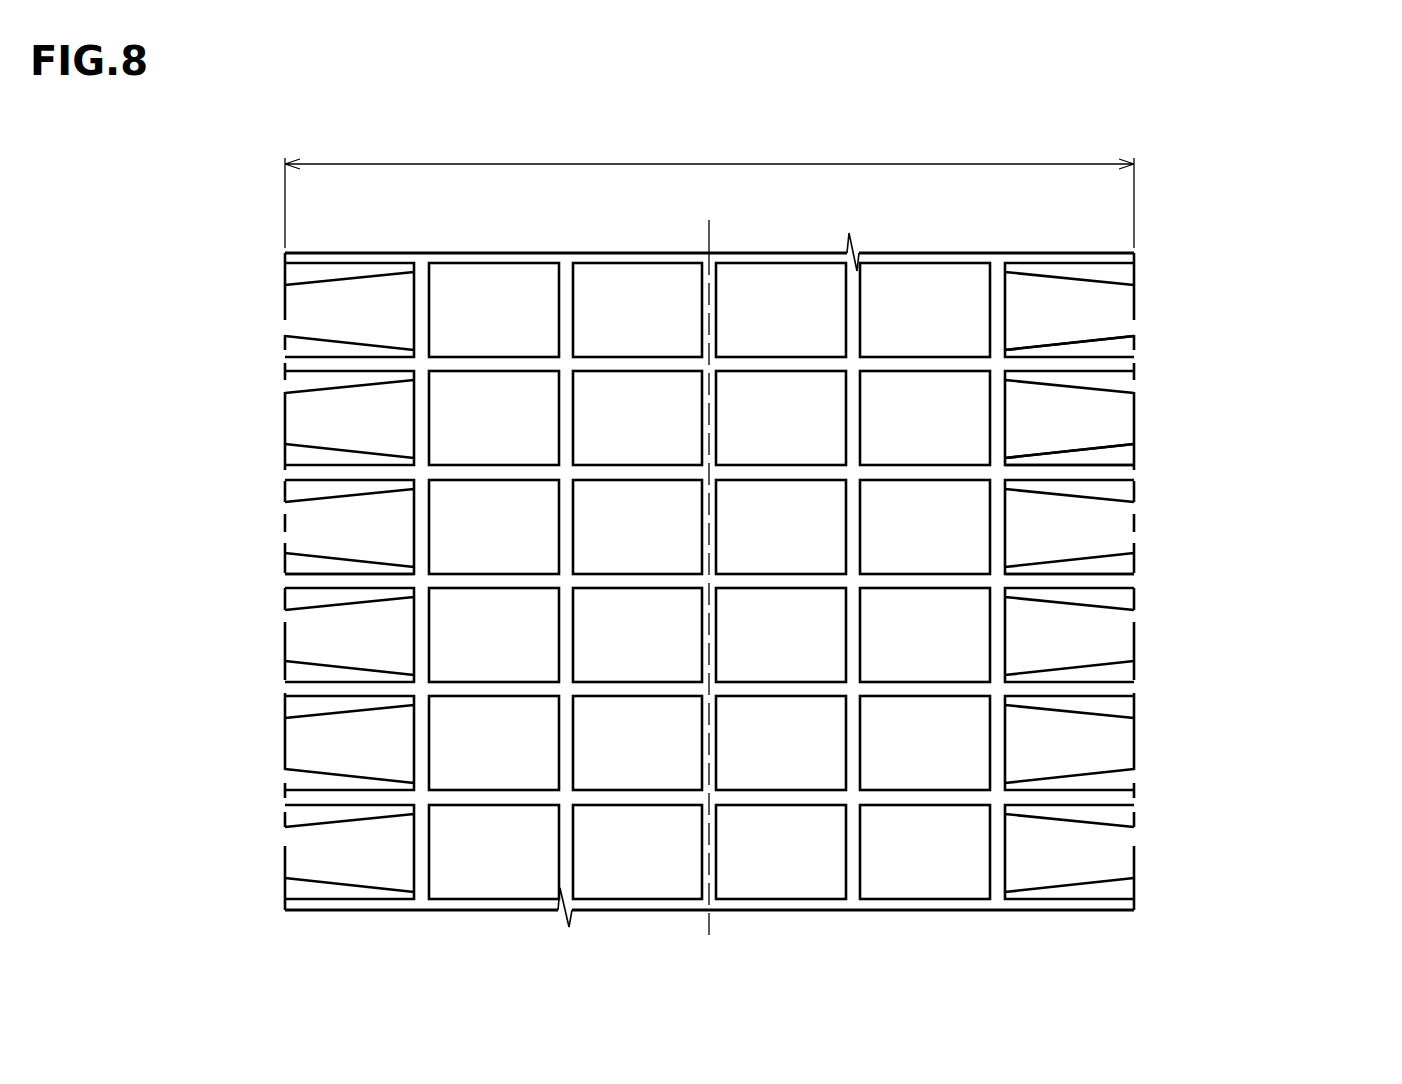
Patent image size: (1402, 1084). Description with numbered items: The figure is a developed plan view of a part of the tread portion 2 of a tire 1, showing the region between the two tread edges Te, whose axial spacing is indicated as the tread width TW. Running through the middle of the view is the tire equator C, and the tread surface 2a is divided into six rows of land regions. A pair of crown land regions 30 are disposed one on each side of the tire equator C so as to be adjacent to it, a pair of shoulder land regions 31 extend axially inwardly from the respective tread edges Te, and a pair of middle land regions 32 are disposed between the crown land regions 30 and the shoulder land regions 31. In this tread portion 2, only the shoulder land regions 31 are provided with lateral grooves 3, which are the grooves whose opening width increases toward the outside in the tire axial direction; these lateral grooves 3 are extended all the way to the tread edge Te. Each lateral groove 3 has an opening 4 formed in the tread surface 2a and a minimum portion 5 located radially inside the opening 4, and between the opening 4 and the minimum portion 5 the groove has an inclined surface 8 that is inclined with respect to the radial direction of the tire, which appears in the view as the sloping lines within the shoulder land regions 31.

The tire 1 is at (1335, 157).
The tread portion 2 is at (1260, 177).
The tread surface 2a is at (338, 421).
The lateral groove 3 is at (1164, 369).
The opening 4 is at (1100, 452).
The minimum portion 5 is at (1090, 468).
The inclined surface 8 is at (1097, 347).
The crown land region 30 is at (634, 853).
The shoulder land region 31 is at (331, 853).
The middle land region 32 is at (502, 853).
The tread edge Te is at (285, 288).
The tread width TW is at (709, 189).
The tire equator C is at (708, 566).